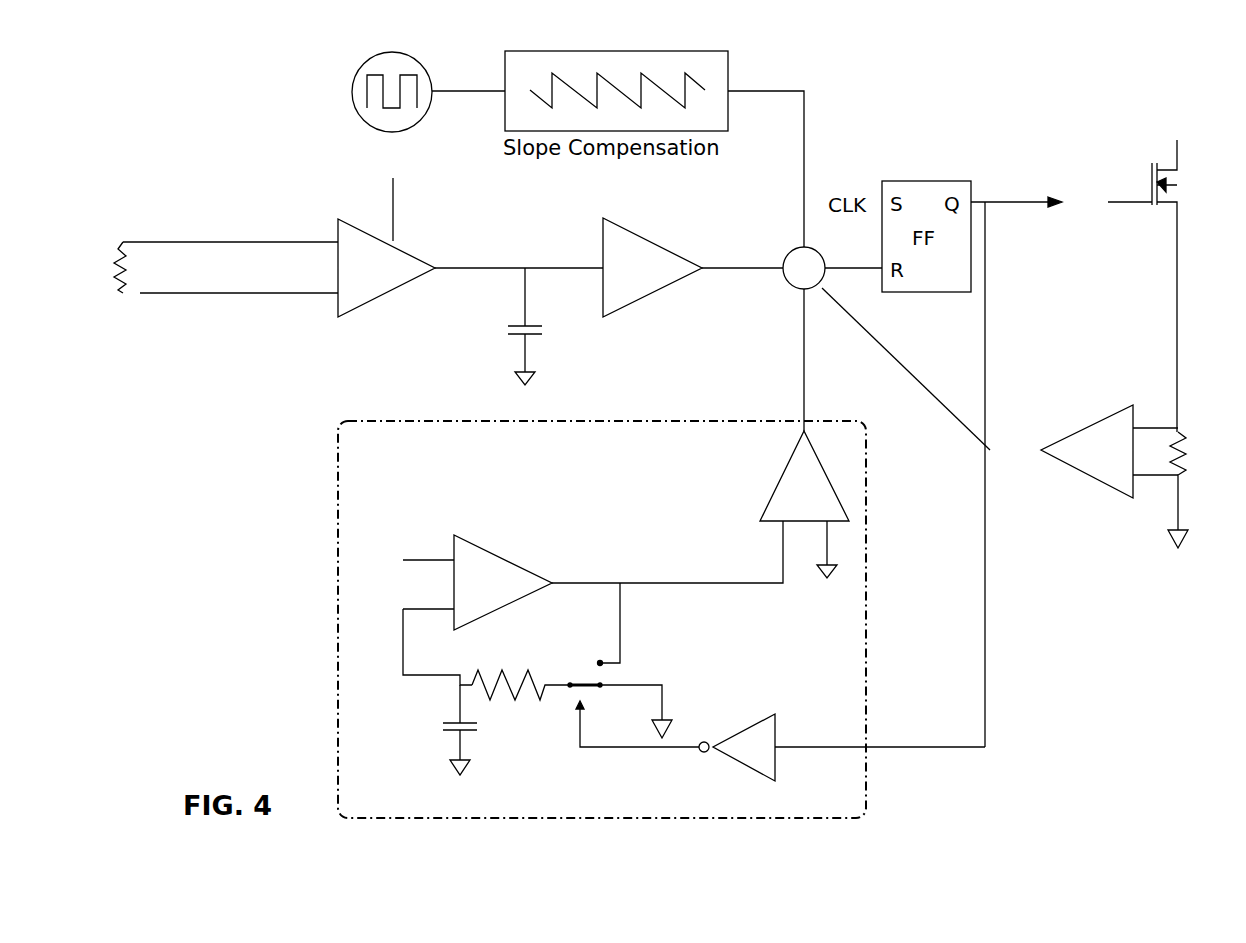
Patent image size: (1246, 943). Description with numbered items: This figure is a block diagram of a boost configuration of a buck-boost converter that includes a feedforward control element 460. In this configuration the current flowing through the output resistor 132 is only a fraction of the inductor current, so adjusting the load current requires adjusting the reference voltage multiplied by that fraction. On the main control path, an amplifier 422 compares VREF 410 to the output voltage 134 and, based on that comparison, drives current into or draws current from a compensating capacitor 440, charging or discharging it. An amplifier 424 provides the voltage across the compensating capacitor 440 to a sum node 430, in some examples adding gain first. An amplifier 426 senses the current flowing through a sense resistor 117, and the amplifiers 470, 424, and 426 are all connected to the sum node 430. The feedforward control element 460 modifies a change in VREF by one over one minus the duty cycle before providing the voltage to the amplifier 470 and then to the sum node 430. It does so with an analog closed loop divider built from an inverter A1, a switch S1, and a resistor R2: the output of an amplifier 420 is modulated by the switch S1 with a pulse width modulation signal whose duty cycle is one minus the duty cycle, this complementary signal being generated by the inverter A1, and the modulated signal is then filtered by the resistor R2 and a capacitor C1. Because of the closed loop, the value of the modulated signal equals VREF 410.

The VREF 410 is at (366, 167).
The output voltage 134 is at (128, 243).
The output resistor 132 is at (128, 294).
The amplifier 422 is at (404, 243).
The amplifier 424 is at (648, 236).
The sum node 430 is at (790, 252).
The compensating capacitor 440 is at (536, 338).
The amplifier 470 is at (778, 480).
The amplifier 420 is at (505, 554).
The feedforward control element 460 is at (866, 622).
The amplifier 426 is at (1104, 488).
The sense resistor 117 is at (1180, 432).
The resistor R2 is at (506, 676).
The switch S1 is at (590, 690).
The capacitor C1 is at (466, 735).
The inverter A1 is at (745, 767).